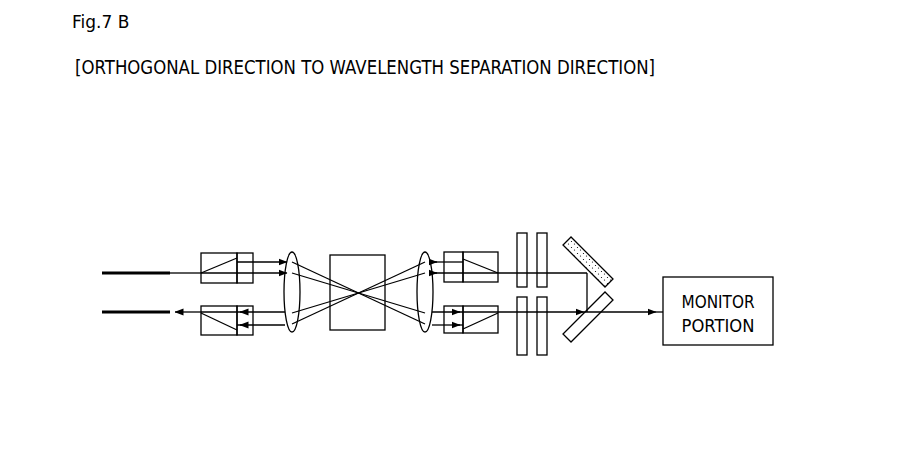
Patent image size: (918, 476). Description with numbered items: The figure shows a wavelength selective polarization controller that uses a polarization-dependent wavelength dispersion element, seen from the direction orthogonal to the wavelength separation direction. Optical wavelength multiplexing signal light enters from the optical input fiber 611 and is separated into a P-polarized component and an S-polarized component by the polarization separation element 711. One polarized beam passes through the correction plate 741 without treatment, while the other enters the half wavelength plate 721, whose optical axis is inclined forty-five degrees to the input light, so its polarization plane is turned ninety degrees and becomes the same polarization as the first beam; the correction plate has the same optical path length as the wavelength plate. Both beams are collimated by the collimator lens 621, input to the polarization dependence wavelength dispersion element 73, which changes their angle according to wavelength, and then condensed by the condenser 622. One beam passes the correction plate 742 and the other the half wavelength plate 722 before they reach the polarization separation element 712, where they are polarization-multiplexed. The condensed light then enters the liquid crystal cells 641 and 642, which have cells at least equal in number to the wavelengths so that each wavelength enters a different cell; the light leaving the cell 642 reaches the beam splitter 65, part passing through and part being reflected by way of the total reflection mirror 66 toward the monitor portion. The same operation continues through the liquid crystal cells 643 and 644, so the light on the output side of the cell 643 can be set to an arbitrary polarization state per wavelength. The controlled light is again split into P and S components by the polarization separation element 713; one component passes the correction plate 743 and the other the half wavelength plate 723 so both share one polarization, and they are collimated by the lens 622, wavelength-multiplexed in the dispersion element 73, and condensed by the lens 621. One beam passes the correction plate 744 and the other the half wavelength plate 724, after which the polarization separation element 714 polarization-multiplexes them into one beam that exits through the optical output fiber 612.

The optical input fiber 611 is at (113, 271).
The optical output fiber 612 is at (132, 314).
The polarization separation element 711 is at (203, 256).
The half wavelength plate 721 is at (242, 256).
The polarization separation element 714 is at (204, 333).
The half wavelength plate 724 is at (248, 334).
The optical path length correction plate 741 is at (250, 268).
The optical path length correction plate 744 is at (253, 320).
The collimator lens 621 is at (292, 250).
The polarization dependence wavelength dispersion element 73 is at (372, 263).
The optical path length correction plate 742 is at (447, 319).
The condenser 622 is at (425, 251).
The optical path length correction plate 743 is at (449, 266).
The half wavelength plate 723 is at (458, 251).
The polarization separation element 713 is at (493, 251).
The half wavelength plate 722 is at (449, 336).
The polarization separation element 712 is at (486, 335).
The 0°-orientation axis liquid crystal cell 644 is at (522, 231).
The 0°-orientation axis liquid crystal cell 641 is at (524, 356).
The 45°-orientation axis liquid crystal cell 643 is at (546, 235).
The 45°-orientation axis liquid crystal cell 642 is at (545, 355).
The total reflection mirror 66 is at (584, 255).
The beam splitter 65 is at (576, 338).